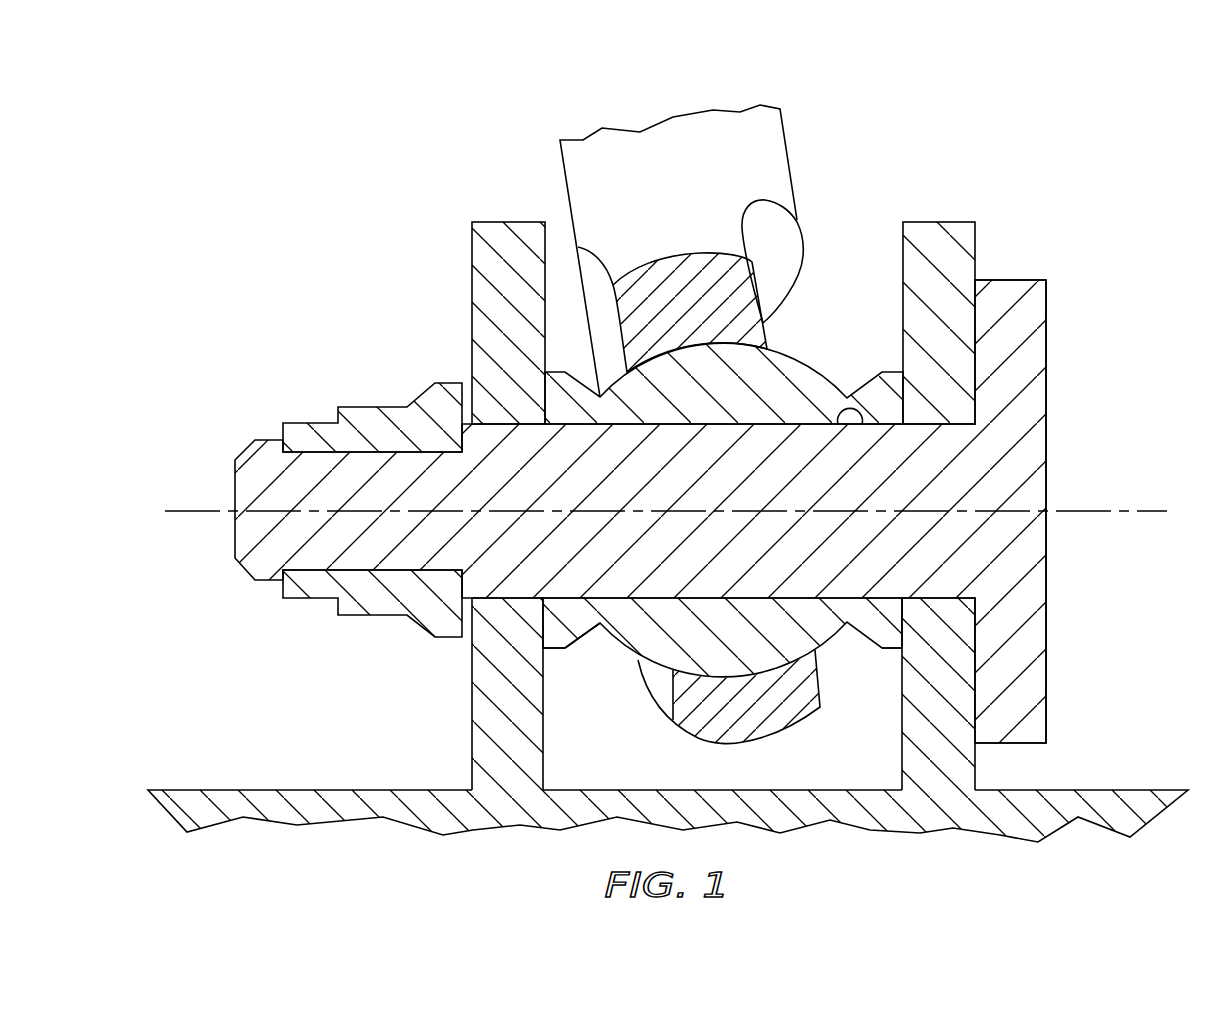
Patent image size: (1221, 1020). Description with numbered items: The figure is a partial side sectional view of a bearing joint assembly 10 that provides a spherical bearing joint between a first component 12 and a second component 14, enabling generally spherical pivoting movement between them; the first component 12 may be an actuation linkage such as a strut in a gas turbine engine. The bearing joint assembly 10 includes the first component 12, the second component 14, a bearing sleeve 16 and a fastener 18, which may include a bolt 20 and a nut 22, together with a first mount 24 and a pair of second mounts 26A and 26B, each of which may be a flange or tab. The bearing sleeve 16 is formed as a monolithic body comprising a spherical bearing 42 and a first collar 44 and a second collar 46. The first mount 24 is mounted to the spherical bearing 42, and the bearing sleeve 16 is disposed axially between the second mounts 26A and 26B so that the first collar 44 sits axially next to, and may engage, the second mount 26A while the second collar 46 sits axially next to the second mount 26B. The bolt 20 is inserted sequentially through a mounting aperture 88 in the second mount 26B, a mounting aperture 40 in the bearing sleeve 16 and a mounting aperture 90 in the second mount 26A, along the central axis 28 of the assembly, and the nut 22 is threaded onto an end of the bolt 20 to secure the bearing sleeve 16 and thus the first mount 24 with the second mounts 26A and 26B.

The bearing joint assembly 10 is at (669, 446).
The first component 12 is at (799, 131).
The second component 14 is at (191, 777).
The bearing sleeve 16 is at (809, 351).
The fastener 18 is at (1058, 375).
The bolt 20 is at (1046, 485).
The nut 22 is at (357, 407).
The first mount 24 is at (663, 710).
The second mount 26A is at (472, 258).
The second mount 26B is at (1047, 300).
The central axis 28 is at (207, 513).
The mounting aperture 40 is at (860, 425).
The spherical bearing 42 is at (625, 656).
The first collar 44 is at (570, 656).
The second collar 46 is at (877, 654).
The mounting aperture 88 is at (940, 600).
The mounting aperture 90 is at (496, 600).